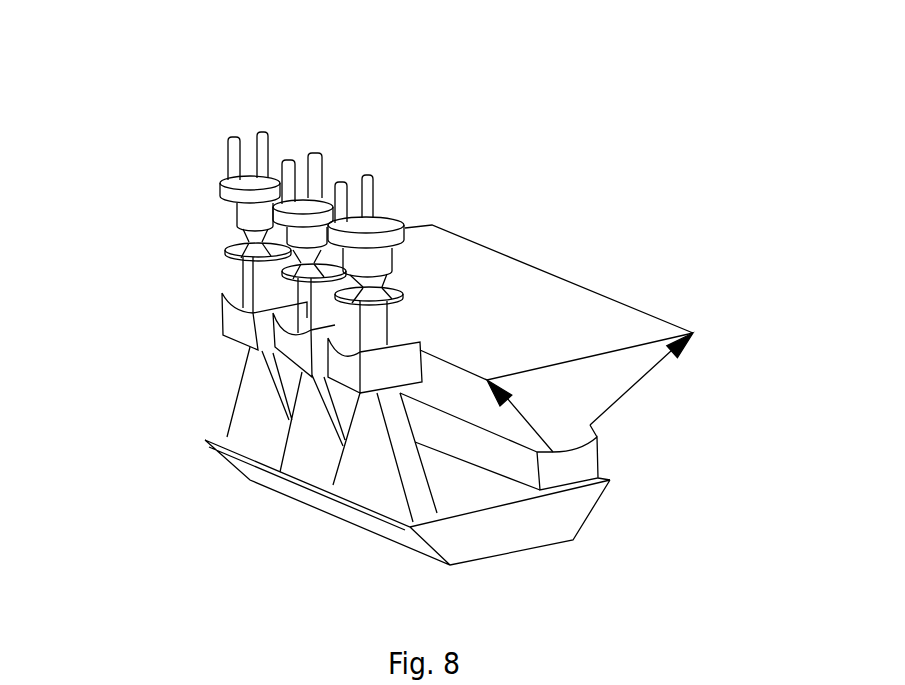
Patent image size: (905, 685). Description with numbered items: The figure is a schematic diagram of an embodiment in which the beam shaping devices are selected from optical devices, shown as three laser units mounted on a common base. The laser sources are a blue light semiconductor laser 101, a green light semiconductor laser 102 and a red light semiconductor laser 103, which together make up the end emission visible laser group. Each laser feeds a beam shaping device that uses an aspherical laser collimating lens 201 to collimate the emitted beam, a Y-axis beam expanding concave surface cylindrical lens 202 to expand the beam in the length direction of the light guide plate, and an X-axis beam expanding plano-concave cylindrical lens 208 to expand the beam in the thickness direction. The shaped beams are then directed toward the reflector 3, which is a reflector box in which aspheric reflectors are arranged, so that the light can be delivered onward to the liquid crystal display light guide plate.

The blue light semiconductor laser 101 is at (270, 140).
The green light semiconductor laser 102 is at (325, 167).
The red light semiconductor laser 103 is at (377, 193).
The aspherical laser collimating lens 201 is at (237, 251).
The beam expanding concave surface cylindrical lens 202 is at (222, 298).
The plano-concave cylindrical lens 208 is at (592, 460).
The reflector 3 is at (548, 530).